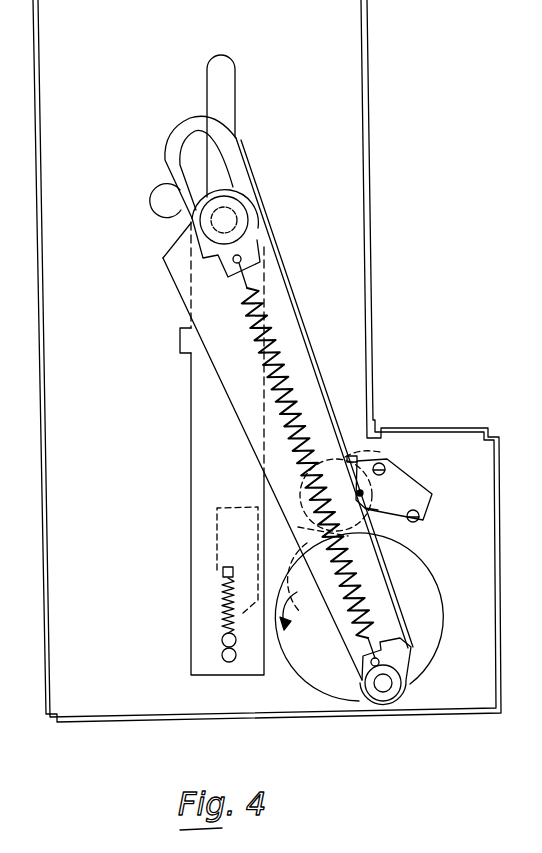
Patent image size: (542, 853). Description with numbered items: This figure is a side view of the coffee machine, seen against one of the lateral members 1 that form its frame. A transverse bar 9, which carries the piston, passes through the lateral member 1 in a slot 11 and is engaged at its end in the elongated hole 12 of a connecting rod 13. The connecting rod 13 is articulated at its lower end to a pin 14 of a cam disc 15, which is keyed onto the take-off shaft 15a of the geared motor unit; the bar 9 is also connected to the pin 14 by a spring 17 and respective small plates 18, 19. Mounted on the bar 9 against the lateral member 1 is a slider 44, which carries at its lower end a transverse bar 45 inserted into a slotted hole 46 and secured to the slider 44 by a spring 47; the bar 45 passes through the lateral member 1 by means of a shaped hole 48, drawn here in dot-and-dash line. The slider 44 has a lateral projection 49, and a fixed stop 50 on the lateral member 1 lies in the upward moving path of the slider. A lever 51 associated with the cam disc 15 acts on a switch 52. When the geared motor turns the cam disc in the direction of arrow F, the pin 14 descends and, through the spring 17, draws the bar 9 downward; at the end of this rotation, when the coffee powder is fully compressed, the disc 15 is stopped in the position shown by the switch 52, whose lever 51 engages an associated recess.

The lateral member 1 is at (343, 67).
The transverse bar 9 is at (226, 219).
The slot 11 is at (238, 64).
The elongated hole 12 is at (191, 162).
The connecting rod 13 is at (205, 305).
The pin 14 is at (383, 690).
The cam disc 15 is at (427, 592).
The take-off shaft 15a is at (326, 564).
The spring 17 is at (284, 344).
The small plate 18 is at (252, 235).
The small plate 19 is at (390, 665).
The slider 44 is at (212, 453).
The transverse bar 45 is at (222, 643).
The slotted hole 46 is at (222, 656).
The spring 47 is at (222, 600).
The shaped hole 48 is at (217, 537).
The lateral projection 49 is at (180, 340).
The fixed stop 50 is at (163, 203).
The lever 51 is at (383, 452).
The switch 52 is at (407, 498).